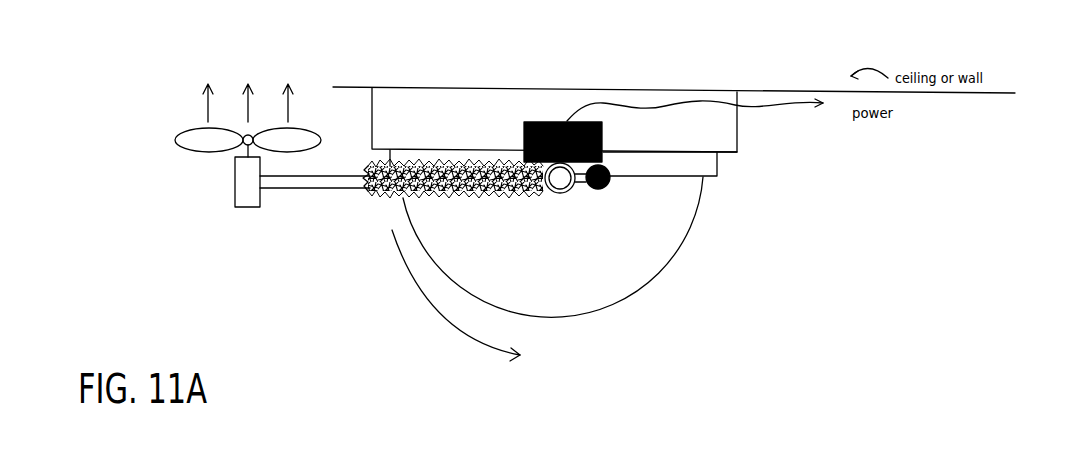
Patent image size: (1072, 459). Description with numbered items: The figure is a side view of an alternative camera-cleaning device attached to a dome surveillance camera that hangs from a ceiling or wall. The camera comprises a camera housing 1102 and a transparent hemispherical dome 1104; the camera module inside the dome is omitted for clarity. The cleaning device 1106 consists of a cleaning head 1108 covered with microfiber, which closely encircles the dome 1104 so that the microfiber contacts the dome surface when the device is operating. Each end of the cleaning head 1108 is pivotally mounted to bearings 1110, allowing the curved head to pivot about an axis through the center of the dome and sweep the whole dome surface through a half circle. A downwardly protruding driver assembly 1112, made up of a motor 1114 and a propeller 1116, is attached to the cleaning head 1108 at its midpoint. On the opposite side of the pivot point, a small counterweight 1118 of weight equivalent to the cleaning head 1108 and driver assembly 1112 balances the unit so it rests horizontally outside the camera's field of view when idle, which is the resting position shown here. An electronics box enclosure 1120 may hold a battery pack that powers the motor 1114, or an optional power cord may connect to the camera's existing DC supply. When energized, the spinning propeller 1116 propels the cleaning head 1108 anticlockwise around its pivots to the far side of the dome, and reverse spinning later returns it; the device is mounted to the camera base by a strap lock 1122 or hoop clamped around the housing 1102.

The camera housing 1102 is at (372, 107).
The transparent hemispherical dome 1104 is at (683, 253).
The cleaning device 1106 is at (343, 198).
The cleaning head 1108 is at (526, 197).
The bearings 1110 is at (563, 205).
The driver assembly 1112 is at (128, 107).
The motor 1114 is at (235, 188).
The propeller 1116 is at (183, 126).
The counterweight 1118 is at (608, 195).
The electronics box enclosure 1120 is at (523, 138).
The strap lock 1122 is at (717, 177).